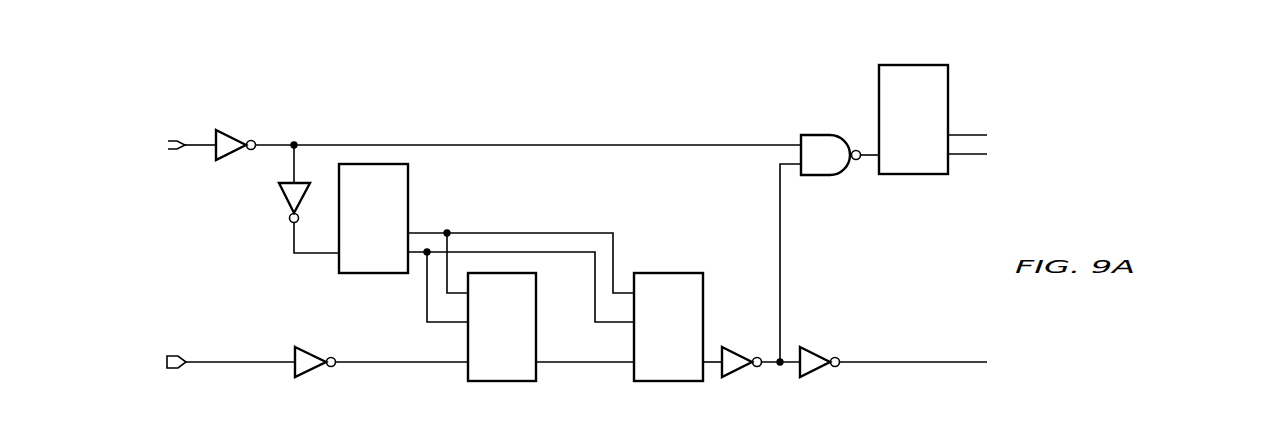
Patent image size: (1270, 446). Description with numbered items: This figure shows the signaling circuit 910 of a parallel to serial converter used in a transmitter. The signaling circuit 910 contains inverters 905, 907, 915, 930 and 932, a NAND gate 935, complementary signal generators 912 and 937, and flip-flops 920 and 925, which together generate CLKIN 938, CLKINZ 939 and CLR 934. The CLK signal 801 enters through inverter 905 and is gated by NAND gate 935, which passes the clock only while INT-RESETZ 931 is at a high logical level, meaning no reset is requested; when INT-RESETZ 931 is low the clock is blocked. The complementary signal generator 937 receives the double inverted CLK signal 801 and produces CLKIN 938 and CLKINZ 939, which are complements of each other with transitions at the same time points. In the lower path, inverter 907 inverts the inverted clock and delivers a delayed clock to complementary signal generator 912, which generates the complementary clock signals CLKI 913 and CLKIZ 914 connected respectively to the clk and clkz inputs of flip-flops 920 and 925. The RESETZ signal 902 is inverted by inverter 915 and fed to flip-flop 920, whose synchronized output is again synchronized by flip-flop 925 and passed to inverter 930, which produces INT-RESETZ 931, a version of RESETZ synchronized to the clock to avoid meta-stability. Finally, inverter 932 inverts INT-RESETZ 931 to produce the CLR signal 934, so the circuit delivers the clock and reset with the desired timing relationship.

The CLK signal 801 is at (200, 142).
The RESETZ signal 902 is at (202, 360).
The inverter 905 is at (230, 140).
The inverter 907 is at (282, 196).
The signaling circuit 910 is at (1063, 143).
The complementary signal generator 912 is at (370, 275).
The CLKI 913 is at (553, 232).
The CLKIZ 914 is at (556, 255).
The inverter 915 is at (312, 378).
The flip-flop 920 is at (500, 384).
The flip-flop 925 is at (667, 272).
The inverter 930 is at (740, 378).
The INT-RESETZ 931 is at (783, 265).
The inverter 932 is at (820, 378).
The CLR signal 934 is at (915, 365).
The NAND gate 935 is at (820, 132).
The complementary signal generator 937 is at (914, 176).
The CLKIN 938 is at (967, 132).
The CLKINZ 939 is at (968, 157).